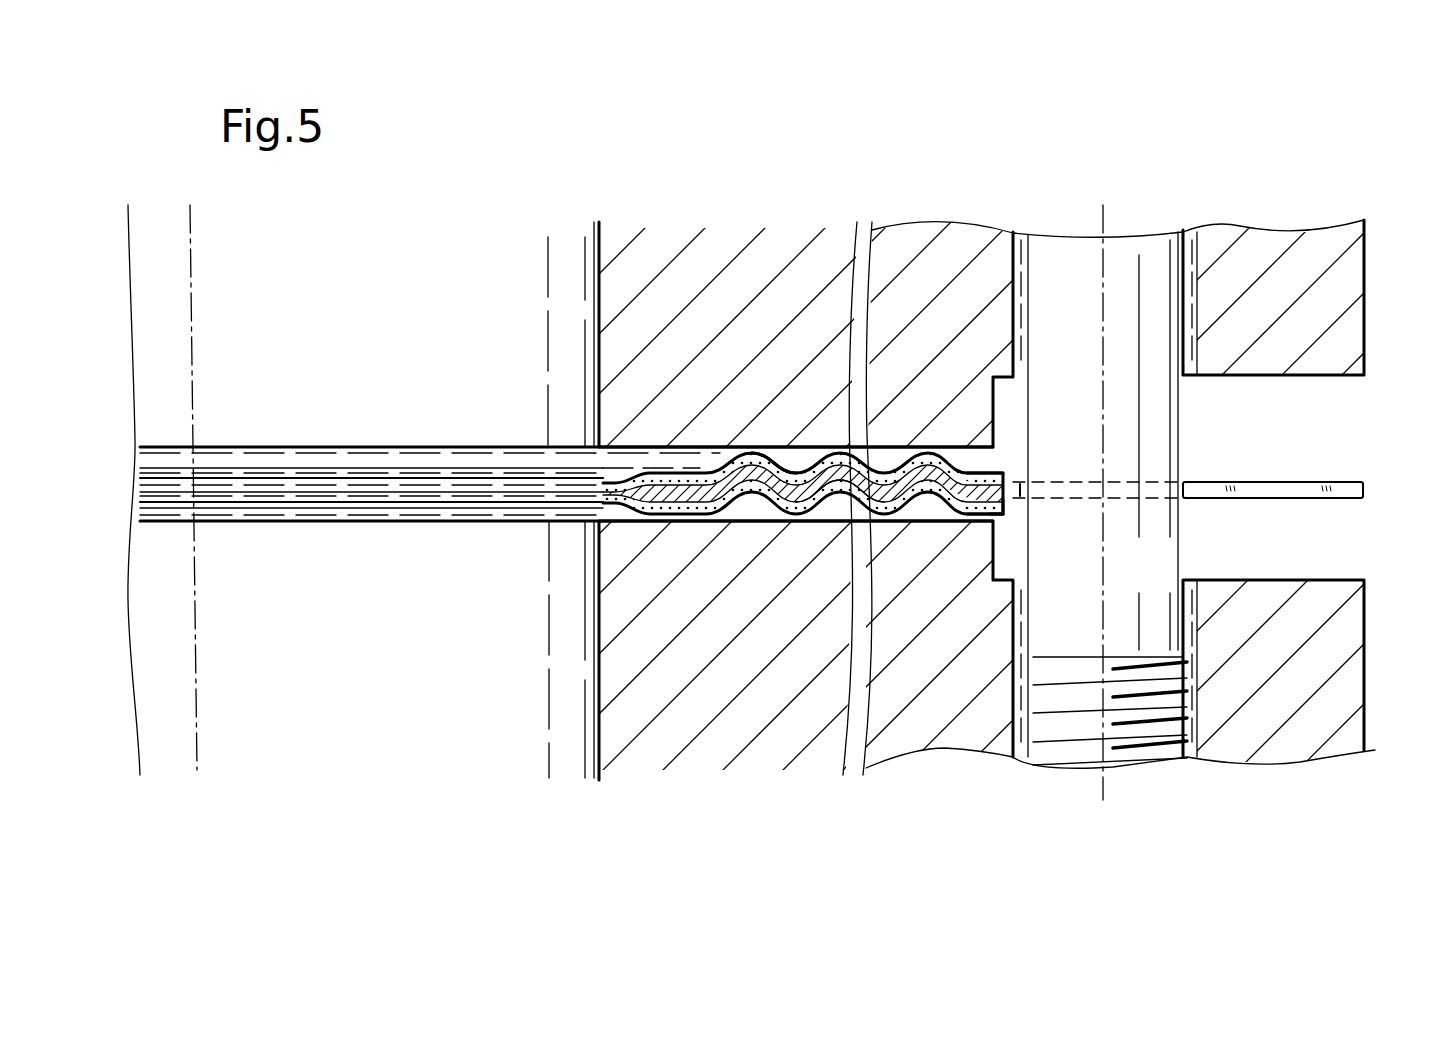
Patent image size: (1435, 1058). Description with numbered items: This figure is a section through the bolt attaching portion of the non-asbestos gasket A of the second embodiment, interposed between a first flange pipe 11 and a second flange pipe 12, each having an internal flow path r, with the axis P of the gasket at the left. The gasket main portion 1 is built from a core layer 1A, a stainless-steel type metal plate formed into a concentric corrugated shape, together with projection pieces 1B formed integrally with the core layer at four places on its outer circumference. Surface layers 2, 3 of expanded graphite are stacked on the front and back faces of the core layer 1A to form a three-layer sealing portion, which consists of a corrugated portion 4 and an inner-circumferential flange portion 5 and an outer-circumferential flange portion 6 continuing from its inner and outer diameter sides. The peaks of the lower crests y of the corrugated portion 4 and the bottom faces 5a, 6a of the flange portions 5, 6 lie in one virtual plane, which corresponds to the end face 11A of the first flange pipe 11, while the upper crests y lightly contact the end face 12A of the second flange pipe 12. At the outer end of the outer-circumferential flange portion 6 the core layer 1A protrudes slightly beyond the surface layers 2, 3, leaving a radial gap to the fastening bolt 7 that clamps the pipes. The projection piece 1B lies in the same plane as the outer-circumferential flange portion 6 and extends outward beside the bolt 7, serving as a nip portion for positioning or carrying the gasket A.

The gasket main portion 1 is at (1214, 506).
The core layer 1A is at (1023, 517).
The projection pieces 1B is at (1255, 483).
The surface layer 2 is at (622, 478).
The surface layer 3 is at (620, 506).
The corrugated portion 4 is at (773, 436).
The inner-circumferential flange portion 5 is at (679, 458).
The bottom face 5a is at (630, 503).
The outer-circumferential flange portion 6 is at (992, 463).
The bottom face 6a is at (1012, 513).
The fastening bolt 7 is at (1142, 240).
The first flange pipe 11 is at (1364, 662).
The end face 11A is at (645, 638).
The second flange pipe 12 is at (1364, 318).
The end face 12A is at (640, 458).
The non-asbestos gasket A is at (292, 472).
The axis P is at (197, 643).
The flow path r is at (347, 305).
The crests y is at (750, 447).